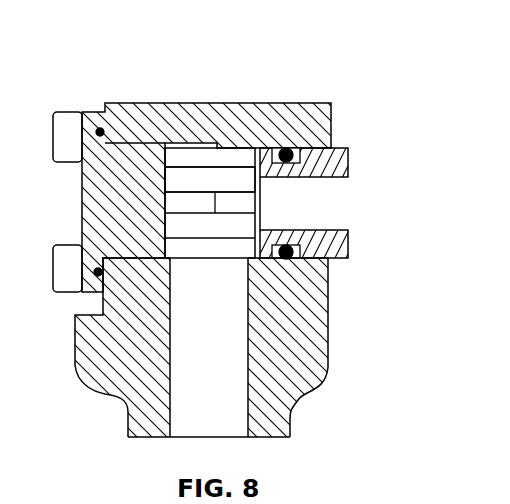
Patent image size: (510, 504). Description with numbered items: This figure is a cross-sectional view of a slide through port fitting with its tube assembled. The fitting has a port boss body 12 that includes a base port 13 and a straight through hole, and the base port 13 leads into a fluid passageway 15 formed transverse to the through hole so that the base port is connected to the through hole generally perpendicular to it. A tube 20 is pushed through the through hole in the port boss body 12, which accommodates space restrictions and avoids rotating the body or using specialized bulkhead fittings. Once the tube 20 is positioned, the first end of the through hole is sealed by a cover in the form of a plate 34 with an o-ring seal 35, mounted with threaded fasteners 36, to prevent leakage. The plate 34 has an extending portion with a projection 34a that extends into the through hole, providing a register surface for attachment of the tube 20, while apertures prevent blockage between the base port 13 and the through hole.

The port boss body 12 is at (328, 368).
The base port 13 is at (257, 440).
The fluid passageway 15 is at (212, 408).
The tube 20 is at (340, 148).
The plate 34 is at (230, 143).
The projection 34a is at (217, 178).
The o-ring seal 35 is at (100, 108).
The threaded fasteners 36 is at (55, 138).